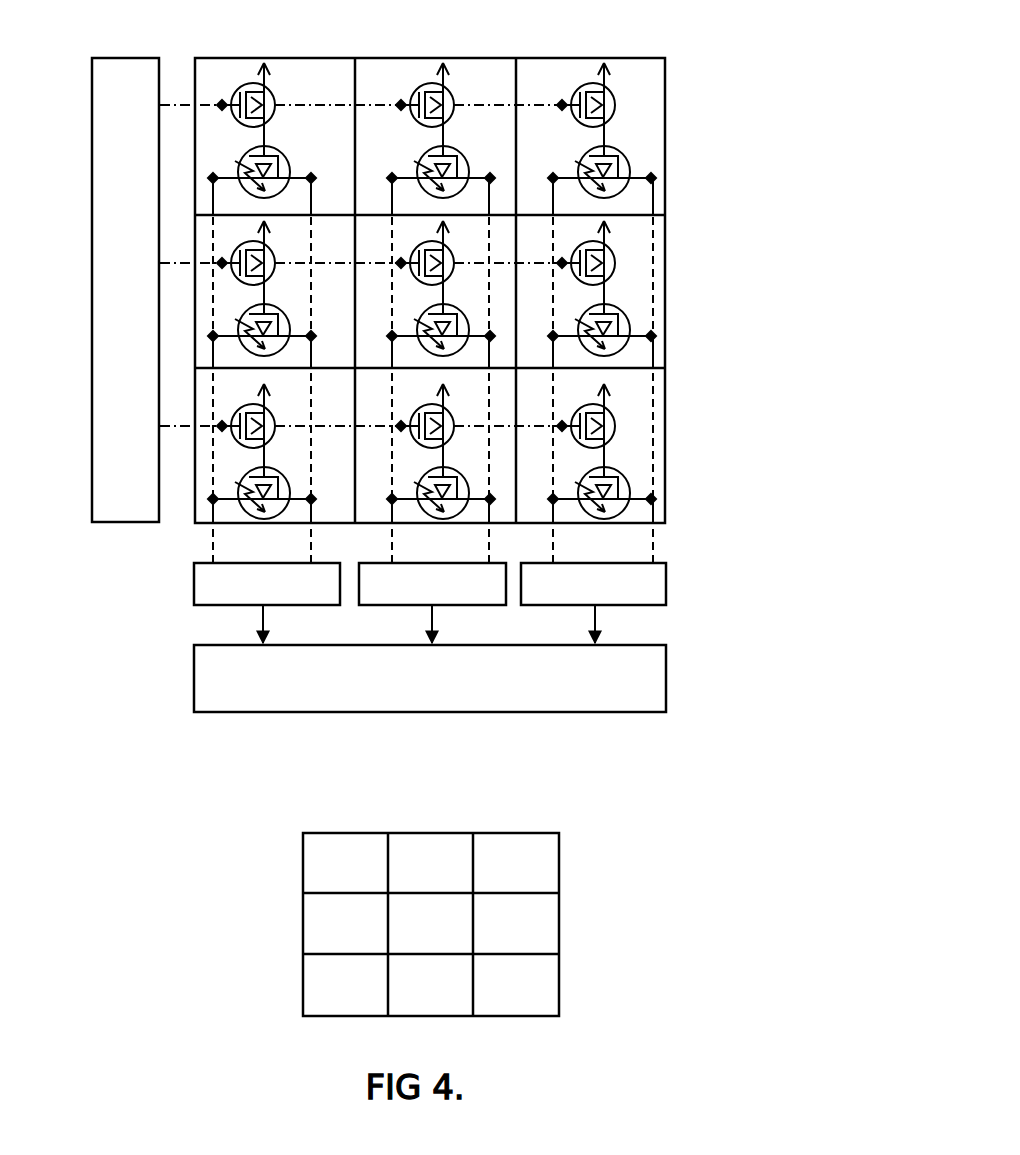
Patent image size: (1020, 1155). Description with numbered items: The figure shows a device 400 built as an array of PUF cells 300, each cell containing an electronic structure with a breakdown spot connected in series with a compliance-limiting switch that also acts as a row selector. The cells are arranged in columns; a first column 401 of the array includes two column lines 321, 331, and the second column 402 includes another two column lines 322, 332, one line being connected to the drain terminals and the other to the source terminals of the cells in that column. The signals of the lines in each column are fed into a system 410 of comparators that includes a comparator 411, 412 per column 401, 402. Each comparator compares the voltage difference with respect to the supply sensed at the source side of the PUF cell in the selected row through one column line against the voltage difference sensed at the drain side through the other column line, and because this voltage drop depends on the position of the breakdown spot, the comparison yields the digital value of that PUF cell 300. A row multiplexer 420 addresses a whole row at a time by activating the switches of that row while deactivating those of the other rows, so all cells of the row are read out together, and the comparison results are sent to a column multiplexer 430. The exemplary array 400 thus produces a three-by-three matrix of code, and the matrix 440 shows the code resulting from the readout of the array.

The device 400 is at (698, 82).
The first column 401 is at (288, 46).
The second column 402 is at (472, 48).
The PUF cell 300 is at (665, 233).
The row multiplexer 420 is at (144, 117).
The column multiplexer 430 is at (635, 693).
The system of comparators 410 is at (682, 588).
The comparator 411 is at (215, 604).
The comparator 412 is at (407, 604).
The column line 321 is at (210, 533).
The column line 331 is at (305, 549).
The column line 322 is at (399, 543).
The column line 332 is at (495, 535).
The matrix 440 is at (612, 880).